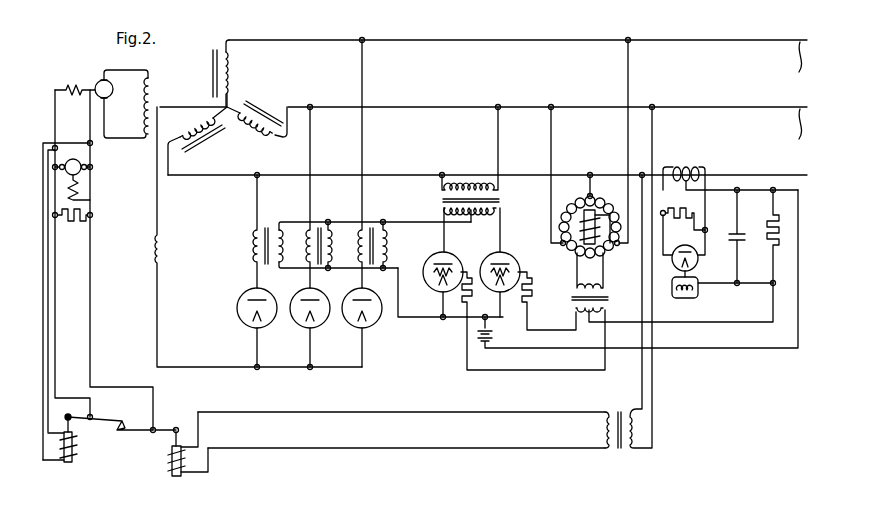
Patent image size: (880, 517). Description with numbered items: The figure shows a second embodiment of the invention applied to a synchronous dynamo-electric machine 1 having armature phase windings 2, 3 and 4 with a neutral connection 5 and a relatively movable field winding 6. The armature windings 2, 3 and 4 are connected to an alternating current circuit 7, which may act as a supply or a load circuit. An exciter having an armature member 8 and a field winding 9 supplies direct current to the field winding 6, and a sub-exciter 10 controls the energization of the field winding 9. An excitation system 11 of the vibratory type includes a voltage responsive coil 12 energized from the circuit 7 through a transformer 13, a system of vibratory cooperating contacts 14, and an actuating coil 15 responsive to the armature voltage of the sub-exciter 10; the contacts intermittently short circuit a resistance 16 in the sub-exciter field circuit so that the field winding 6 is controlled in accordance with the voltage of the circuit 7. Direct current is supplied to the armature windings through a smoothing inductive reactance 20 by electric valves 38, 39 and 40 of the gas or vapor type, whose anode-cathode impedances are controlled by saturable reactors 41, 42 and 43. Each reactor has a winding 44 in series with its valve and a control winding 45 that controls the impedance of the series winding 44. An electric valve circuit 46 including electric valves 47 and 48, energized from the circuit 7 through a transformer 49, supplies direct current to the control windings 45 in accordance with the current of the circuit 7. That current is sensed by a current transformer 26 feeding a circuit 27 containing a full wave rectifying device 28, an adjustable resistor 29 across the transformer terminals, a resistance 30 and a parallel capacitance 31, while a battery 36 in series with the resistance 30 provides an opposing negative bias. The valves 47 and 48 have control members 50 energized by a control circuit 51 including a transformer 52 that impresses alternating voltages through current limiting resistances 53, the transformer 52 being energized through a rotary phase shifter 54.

The dynamo-electric machine 1 is at (114, 112).
The armature phase winding 2 is at (232, 64).
The armature phase winding 3 is at (258, 132).
The armature phase winding 4 is at (184, 130).
The neutral connection 5 is at (229, 103).
The field winding 6 is at (140, 108).
The alternating current circuit 7 is at (799, 139).
The armature member 8 is at (96, 82).
The field winding 9 is at (75, 103).
The sub-exciter 10 is at (113, 177).
The excitation system 11 is at (125, 438).
The voltage responsive coil 12 is at (165, 468).
The transformer 13 is at (620, 409).
The vibratory cooperating contacts 14 is at (147, 416).
The actuating coil 15 is at (74, 447).
The resistance 16 is at (73, 224).
The smoothing inductive reactance 20 is at (152, 254).
The current transformer 26 is at (686, 165).
The circuit 27 is at (730, 220).
The full wave rectifying device 28 is at (699, 264).
The adjustable resistor 29 is at (673, 205).
The resistance 30 is at (768, 229).
The capacitance 31 is at (731, 233).
The battery 36 is at (494, 336).
The electric valve 38 is at (245, 292).
The electric valve 39 is at (298, 292).
The electric valve 40 is at (350, 292).
The saturable reactor 41 is at (350, 231).
The saturable reactor 42 is at (335, 219).
The saturable reactor 43 is at (388, 217).
The winding 44 is at (253, 242).
The control winding 45 is at (284, 246).
The electric valve circuit 46 is at (487, 218).
The electric valve 47 is at (431, 256).
The electric valve 48 is at (512, 256).
The transformer 49 is at (504, 200).
The control member 50 is at (530, 268).
The control circuit 51 is at (556, 325).
The transformer 52 is at (606, 300).
The current limiting resistance 53 is at (518, 301).
The rotary phase shifter 54 is at (621, 195).